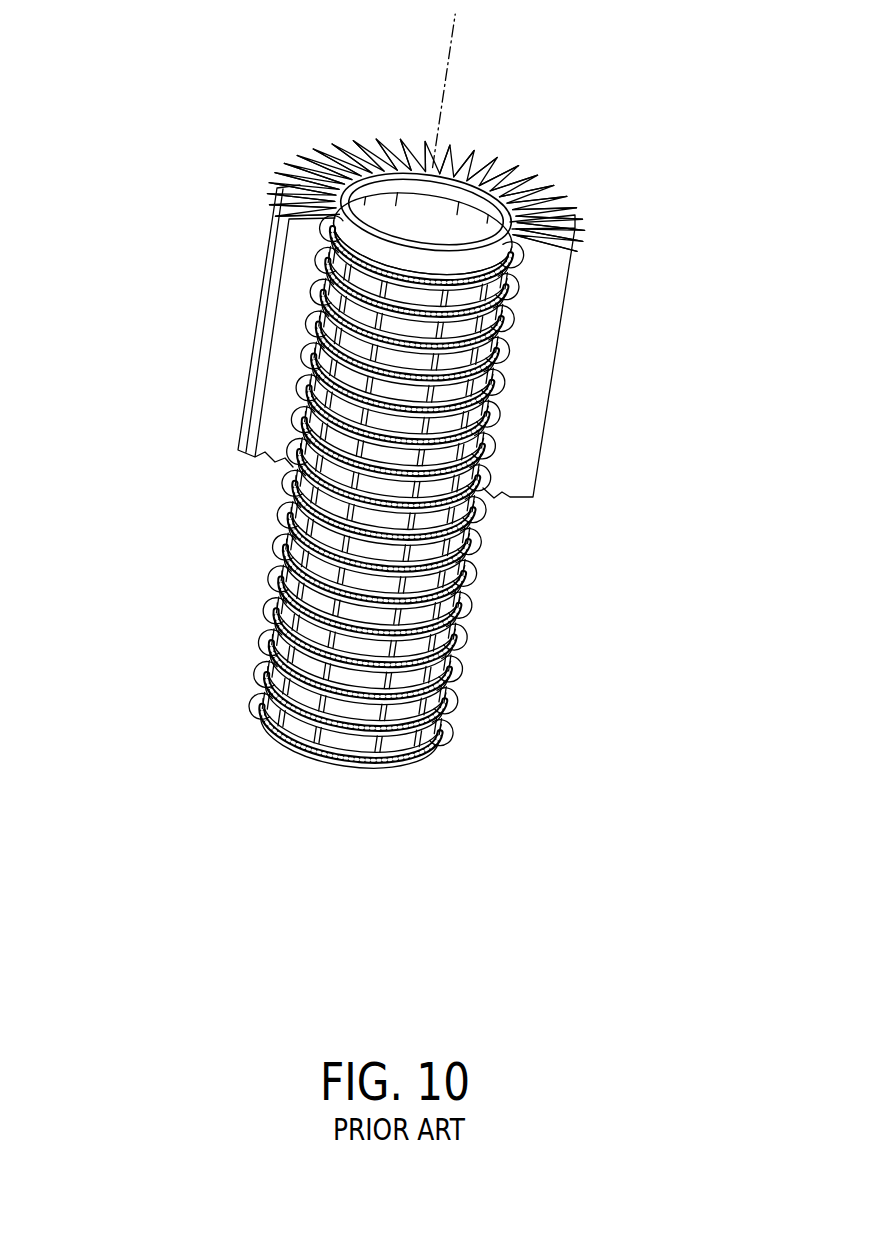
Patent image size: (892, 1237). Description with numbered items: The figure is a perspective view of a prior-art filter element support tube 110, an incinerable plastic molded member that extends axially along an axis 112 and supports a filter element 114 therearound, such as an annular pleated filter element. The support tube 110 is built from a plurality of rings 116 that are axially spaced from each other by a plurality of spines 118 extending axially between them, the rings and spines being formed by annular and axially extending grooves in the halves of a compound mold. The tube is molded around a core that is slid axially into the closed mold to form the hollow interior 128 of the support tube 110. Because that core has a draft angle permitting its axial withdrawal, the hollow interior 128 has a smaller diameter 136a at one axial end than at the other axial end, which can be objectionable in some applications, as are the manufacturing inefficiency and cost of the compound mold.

The support tube 110 is at (413, 447).
The axis 112 is at (447, 88).
The filter element 114 is at (280, 187).
The rings 116 is at (467, 587).
The spines 118 is at (432, 677).
The hollow interior 128 is at (417, 187).
The smaller diameter 136a is at (447, 180).